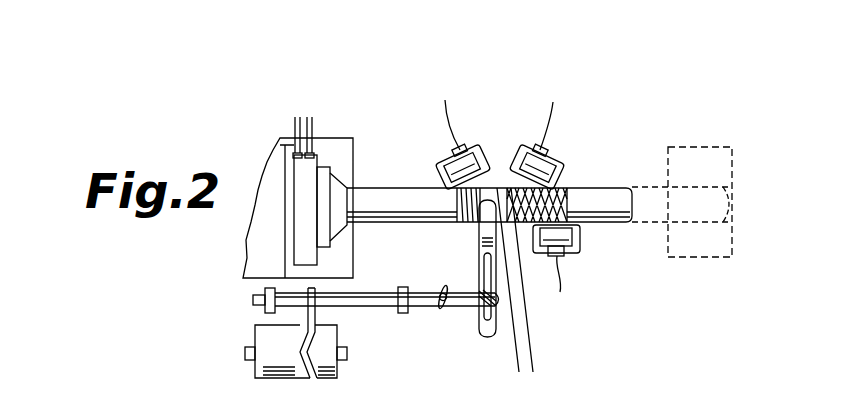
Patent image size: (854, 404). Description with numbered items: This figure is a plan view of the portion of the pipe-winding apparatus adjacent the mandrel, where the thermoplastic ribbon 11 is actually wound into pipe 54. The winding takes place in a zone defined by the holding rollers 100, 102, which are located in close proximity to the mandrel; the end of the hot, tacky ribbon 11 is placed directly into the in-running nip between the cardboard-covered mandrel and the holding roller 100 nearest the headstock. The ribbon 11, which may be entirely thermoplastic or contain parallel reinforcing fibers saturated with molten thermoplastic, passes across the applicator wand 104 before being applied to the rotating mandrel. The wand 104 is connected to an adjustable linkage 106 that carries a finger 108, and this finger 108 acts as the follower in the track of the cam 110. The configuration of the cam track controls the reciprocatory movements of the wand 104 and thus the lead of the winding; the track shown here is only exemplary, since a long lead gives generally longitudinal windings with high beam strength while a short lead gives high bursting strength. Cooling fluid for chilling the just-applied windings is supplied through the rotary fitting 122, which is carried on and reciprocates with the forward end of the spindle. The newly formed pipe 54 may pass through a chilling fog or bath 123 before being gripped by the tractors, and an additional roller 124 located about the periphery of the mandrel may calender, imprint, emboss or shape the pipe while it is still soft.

The ribbon 11 is at (520, 310).
The pipe 54 is at (638, 186).
The holding roller 100 is at (473, 148).
The holding roller 102 is at (547, 170).
The applicator wand 104 is at (480, 247).
The adjustable linkage 106 is at (440, 283).
The finger 108 is at (316, 312).
The cam 110 is at (273, 367).
The rotary fitting 122 is at (308, 172).
The chilling fog or bath 123 is at (711, 150).
The additional roller 124 is at (568, 250).